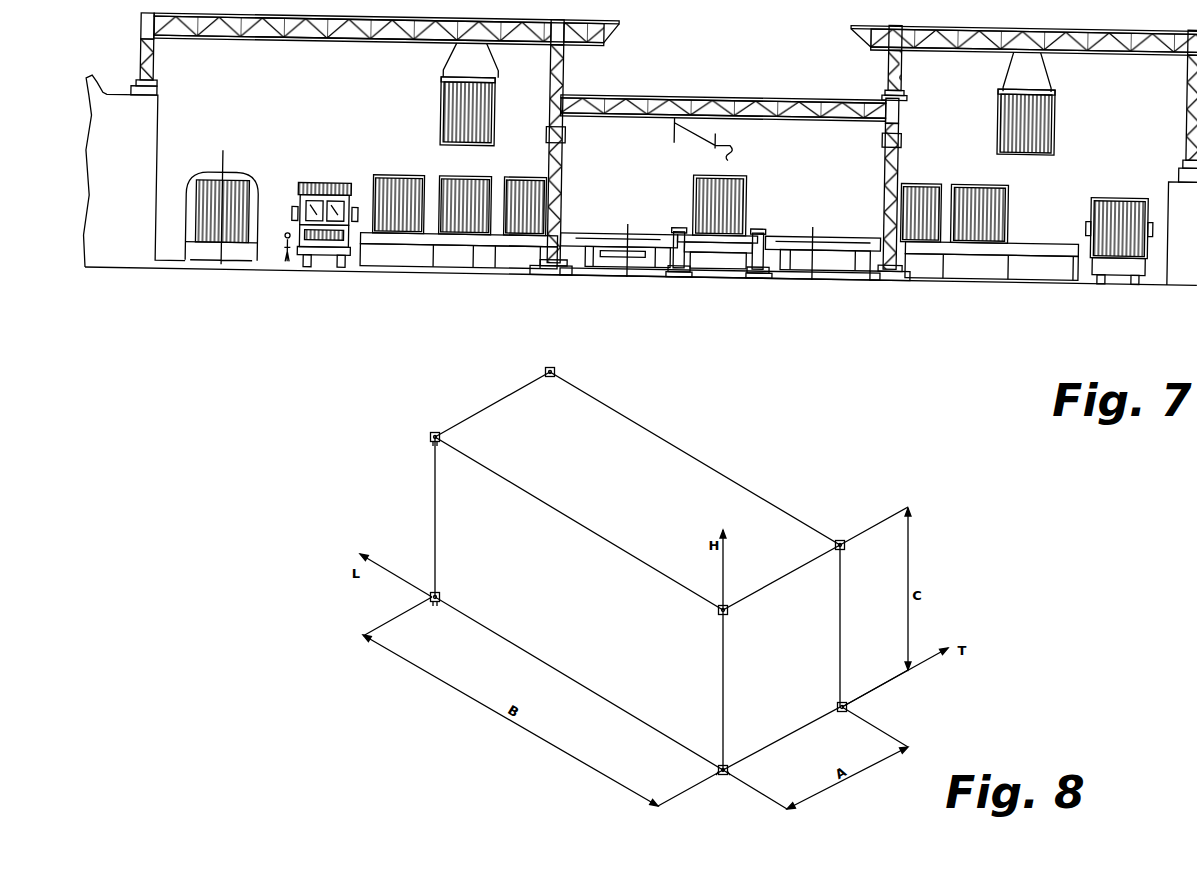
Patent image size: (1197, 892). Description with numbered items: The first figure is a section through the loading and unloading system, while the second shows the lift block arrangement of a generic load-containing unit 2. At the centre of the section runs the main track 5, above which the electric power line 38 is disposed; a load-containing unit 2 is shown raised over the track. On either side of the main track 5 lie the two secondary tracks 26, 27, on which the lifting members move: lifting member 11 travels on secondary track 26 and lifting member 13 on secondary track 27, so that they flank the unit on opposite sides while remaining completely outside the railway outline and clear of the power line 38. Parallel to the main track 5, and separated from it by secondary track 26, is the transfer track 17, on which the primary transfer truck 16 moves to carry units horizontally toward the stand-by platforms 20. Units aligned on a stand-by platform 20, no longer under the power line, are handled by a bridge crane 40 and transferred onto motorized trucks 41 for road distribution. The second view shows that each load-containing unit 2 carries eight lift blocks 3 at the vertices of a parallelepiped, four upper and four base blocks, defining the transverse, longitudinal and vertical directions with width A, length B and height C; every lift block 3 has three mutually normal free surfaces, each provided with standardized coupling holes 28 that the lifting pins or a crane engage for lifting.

In FIG. 7, the load-containing unit 2 is at (453, 129).
In FIG. 8, the load-containing unit 2 is at (580, 619).
In FIG. 8, the lift block 3 is at (440, 436).
In FIG. 7, the main track 5 is at (700, 273).
In FIG. 7, the lifting member 11 is at (675, 222).
In FIG. 7, the lifting member 13 is at (762, 220).
In FIG. 7, the primary transfer truck 16 is at (625, 248).
In FIG. 7, the transfer track 17 is at (665, 273).
In FIG. 7, the stand-by platform 20 is at (470, 237).
In FIG. 7, the secondary track 26 is at (688, 273).
In FIG. 7, the secondary track 27 is at (768, 273).
In FIG. 8, the coupling hole 28 is at (430, 446).
In FIG. 7, the electric power line 38 is at (728, 144).
In FIG. 7, the bridge crane 40 is at (372, 37).
In FIG. 7, the motorized truck 41 is at (333, 242).